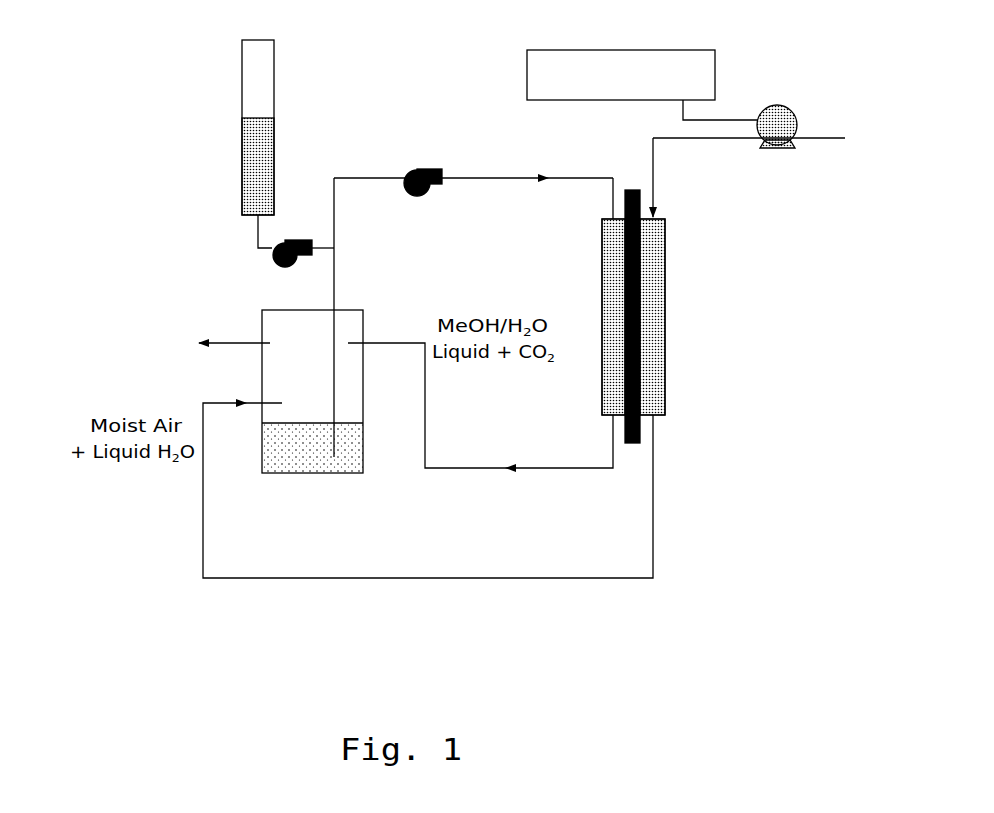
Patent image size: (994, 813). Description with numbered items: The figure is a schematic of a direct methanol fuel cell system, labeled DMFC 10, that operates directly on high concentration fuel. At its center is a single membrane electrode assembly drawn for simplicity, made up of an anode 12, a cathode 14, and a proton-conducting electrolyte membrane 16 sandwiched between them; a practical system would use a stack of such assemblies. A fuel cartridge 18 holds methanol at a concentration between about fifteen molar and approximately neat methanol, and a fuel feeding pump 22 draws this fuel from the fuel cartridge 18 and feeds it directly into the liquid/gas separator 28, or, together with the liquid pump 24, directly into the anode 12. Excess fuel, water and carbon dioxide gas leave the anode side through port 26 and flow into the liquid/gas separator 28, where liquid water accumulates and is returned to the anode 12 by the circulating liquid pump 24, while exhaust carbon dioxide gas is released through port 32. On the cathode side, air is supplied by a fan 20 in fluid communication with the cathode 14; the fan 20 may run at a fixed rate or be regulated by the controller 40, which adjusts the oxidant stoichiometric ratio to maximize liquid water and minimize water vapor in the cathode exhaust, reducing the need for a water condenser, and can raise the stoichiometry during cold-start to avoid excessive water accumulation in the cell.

The direct methanol fuel cell (DMFC) 10 is at (668, 373).
The anode 12 is at (600, 360).
The cathode 14 is at (647, 295).
The proton-conducting electrolyte membrane 16 is at (633, 447).
The fuel cartridge 18 is at (230, 58).
The fan 20 is at (845, 108).
The pump 22 is at (275, 267).
The circulating pump 24 is at (404, 168).
The port 26 is at (480, 426).
The liquid/gas separator 28 is at (262, 443).
The port 32 is at (155, 361).
The controller 40 is at (642, 85).